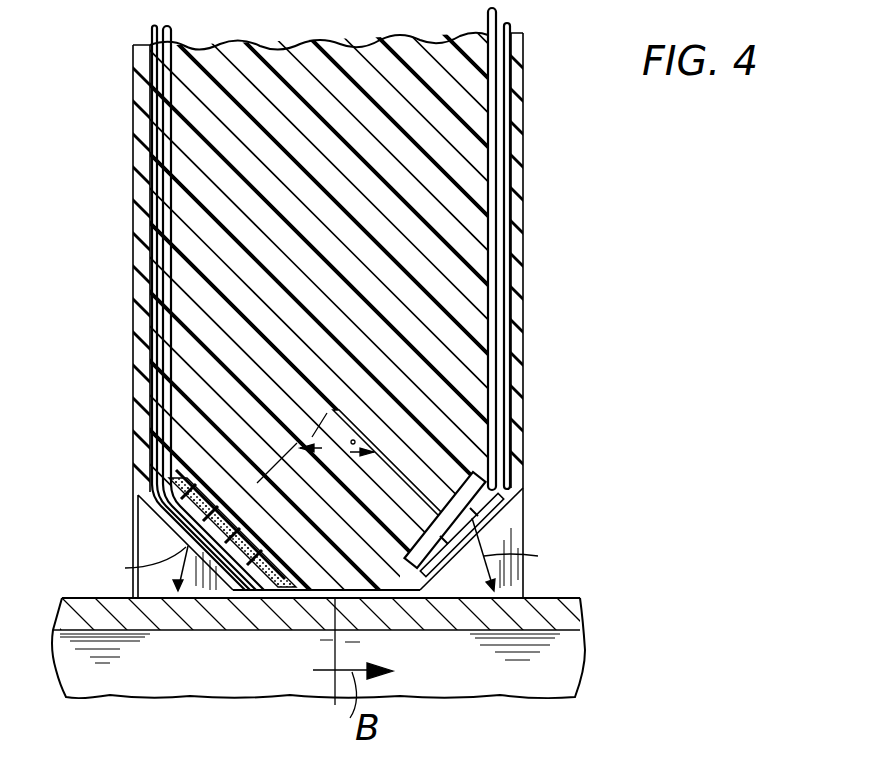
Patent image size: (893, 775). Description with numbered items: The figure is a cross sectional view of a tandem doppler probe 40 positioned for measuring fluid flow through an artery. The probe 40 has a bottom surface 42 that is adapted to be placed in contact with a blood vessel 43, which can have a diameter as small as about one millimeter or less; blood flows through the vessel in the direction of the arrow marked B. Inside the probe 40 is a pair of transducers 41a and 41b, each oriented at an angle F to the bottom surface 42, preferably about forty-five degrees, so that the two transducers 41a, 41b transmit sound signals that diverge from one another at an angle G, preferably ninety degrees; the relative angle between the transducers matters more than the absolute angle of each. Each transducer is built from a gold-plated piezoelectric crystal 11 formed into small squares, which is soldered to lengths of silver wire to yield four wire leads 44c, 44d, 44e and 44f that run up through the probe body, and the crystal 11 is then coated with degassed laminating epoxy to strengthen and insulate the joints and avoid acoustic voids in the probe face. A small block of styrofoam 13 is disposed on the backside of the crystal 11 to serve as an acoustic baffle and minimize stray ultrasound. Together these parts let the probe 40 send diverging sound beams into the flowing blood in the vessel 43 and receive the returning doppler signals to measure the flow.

The tandem doppler probe 40 is at (446, 387).
The transducer 41a is at (213, 480).
The transducer 41b is at (418, 530).
The bottom surface 42 is at (376, 590).
The blood vessel 43 is at (313, 606).
The wire lead 44c is at (150, 230).
The wire lead 44d is at (172, 292).
The wire lead 44e is at (490, 314).
The wire lead 44f is at (522, 308).
The crystal 11 is at (253, 584).
The block of styrofoam 13 is at (240, 534).